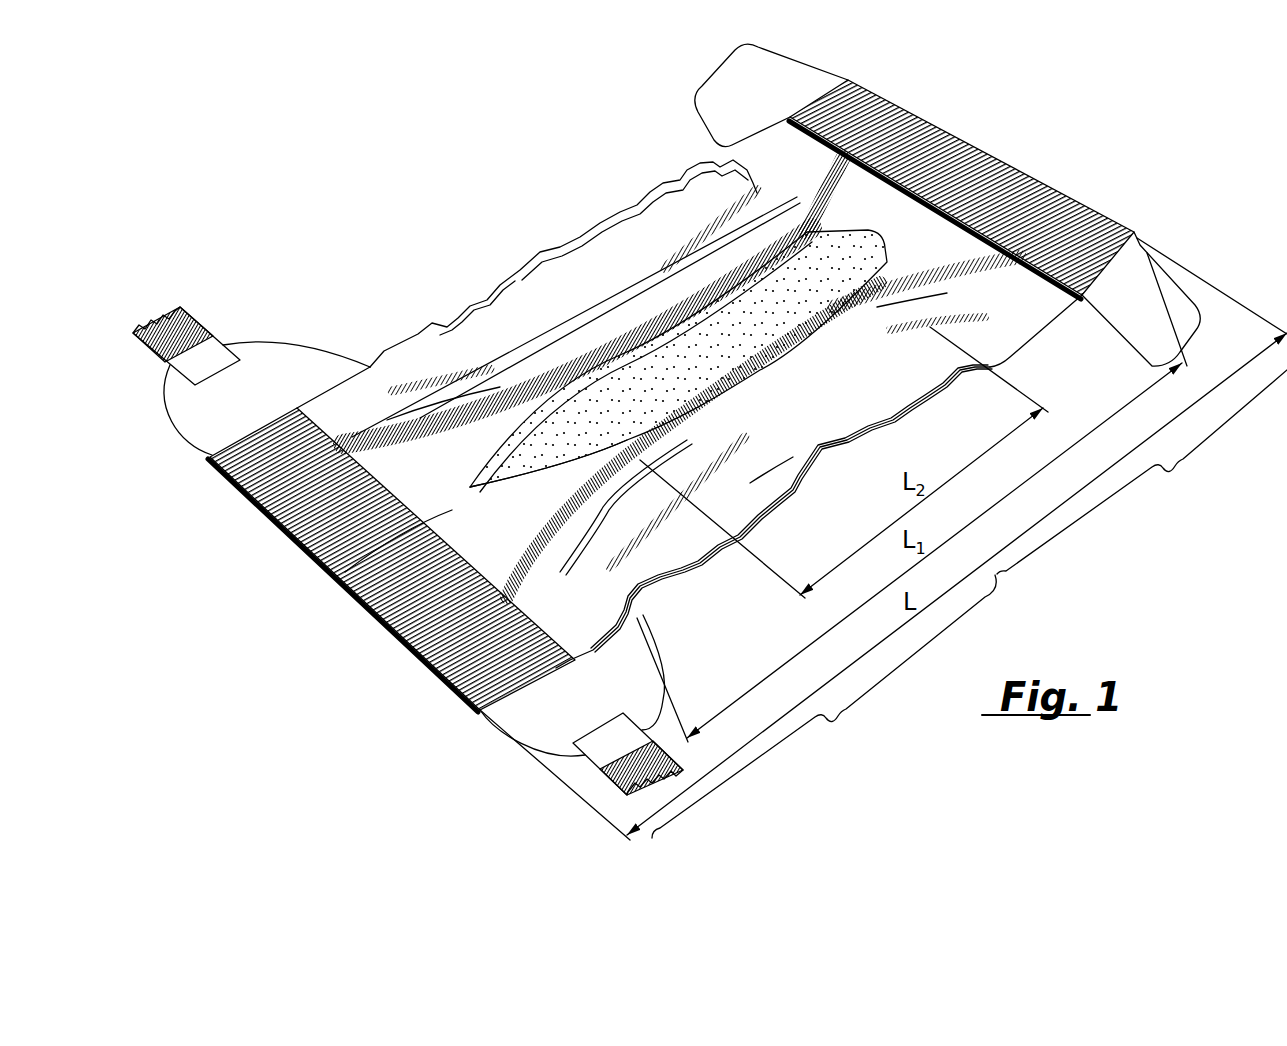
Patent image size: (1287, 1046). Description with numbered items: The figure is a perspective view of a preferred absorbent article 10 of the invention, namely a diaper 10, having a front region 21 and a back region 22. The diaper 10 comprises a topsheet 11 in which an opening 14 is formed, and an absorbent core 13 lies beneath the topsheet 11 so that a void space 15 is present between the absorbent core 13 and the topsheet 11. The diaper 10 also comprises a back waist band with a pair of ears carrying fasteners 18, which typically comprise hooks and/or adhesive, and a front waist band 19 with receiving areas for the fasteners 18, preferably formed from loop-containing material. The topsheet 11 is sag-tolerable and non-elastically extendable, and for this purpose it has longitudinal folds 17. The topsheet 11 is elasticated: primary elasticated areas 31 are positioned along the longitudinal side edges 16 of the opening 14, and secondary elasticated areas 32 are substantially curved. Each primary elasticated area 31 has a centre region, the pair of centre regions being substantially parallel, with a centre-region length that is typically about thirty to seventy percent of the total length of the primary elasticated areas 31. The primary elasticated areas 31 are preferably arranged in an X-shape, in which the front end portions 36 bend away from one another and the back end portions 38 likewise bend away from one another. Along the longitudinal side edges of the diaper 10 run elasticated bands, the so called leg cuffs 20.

The absorbent article 10 is at (488, 181).
The topsheet 11 is at (337, 580).
The absorbent core 13 is at (512, 443).
The opening 14 is at (560, 487).
The void space 15 is at (612, 403).
The longitudinal side edges 16 is at (653, 338).
The longitudinal folds 17 is at (645, 262).
The fasteners 18 is at (184, 305).
The front waist band 19 is at (728, 80).
The leg cuffs 20 is at (657, 182).
The front region 21 is at (1142, 472).
The back region 22 is at (824, 706).
The primary elasticated areas 31 is at (603, 340).
The secondary elasticated areas 32 is at (753, 190).
The front end portions 36 is at (938, 268).
The back end portions 38 is at (523, 570).